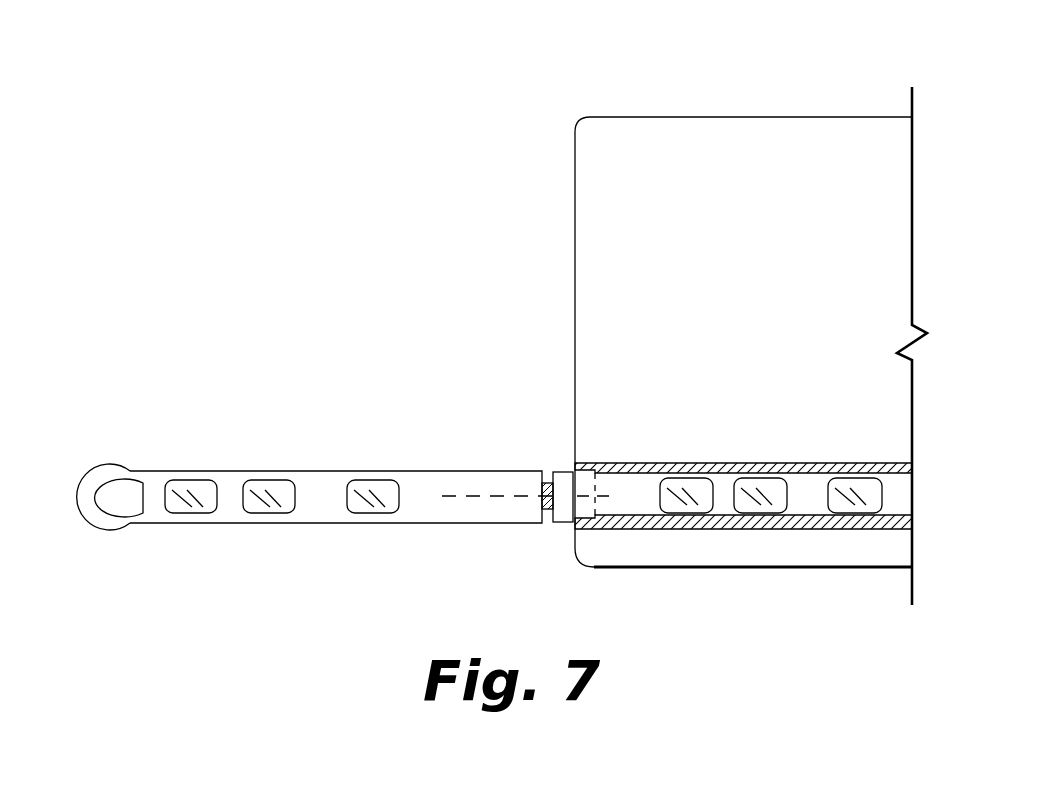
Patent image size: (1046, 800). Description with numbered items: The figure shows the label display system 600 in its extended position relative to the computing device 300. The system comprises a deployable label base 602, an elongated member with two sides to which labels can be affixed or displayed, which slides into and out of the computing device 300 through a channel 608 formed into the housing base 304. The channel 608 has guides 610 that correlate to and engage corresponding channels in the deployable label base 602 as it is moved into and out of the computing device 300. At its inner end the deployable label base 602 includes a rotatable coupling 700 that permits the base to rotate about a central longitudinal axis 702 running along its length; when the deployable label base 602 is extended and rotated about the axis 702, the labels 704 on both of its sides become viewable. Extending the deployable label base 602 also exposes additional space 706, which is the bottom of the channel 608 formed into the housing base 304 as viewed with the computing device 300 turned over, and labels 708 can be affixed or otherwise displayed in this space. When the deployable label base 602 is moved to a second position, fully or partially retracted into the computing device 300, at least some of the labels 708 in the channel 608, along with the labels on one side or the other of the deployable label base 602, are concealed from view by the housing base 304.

The computing device 300 is at (730, 106).
The housing base 304 is at (574, 262).
The label display system 600 is at (301, 421).
The deployable label base 602 is at (485, 470).
The channel 608 is at (625, 530).
The guides 610 is at (620, 463).
The rotatable coupling 700 is at (540, 515).
The central longitudinal axis 702 is at (445, 500).
The labels 704 is at (265, 483).
The additional space 706 is at (811, 567).
The labels 708 is at (850, 480).